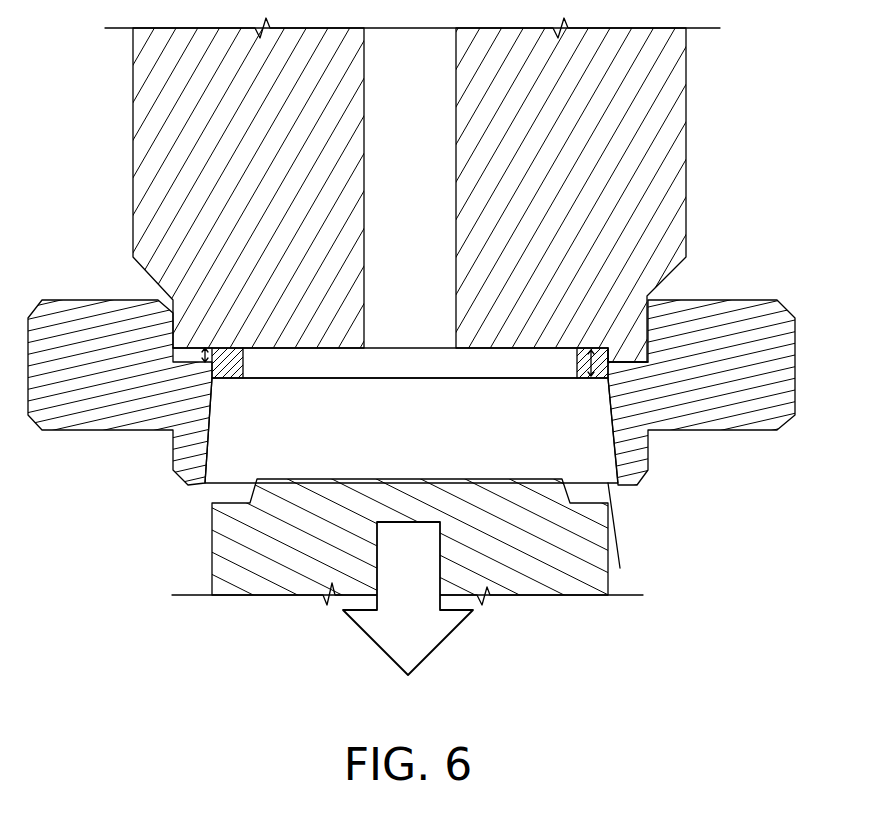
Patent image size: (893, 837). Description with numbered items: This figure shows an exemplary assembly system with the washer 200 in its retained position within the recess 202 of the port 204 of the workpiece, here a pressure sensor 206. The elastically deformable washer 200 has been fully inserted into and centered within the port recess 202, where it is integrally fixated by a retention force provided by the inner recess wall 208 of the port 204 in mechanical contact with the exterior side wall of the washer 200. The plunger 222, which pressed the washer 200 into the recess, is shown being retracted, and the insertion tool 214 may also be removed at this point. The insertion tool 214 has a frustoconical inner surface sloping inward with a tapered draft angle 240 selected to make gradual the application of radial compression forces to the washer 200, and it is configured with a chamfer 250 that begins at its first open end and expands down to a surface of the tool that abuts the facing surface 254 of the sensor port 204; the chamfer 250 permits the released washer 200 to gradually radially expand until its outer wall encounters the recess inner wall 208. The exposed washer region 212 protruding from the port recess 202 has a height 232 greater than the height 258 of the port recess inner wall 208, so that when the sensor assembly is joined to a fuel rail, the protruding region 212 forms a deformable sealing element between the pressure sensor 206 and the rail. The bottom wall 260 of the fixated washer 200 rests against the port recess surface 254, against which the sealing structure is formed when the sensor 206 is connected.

The washer 200 is at (588, 379).
The recess 202 is at (481, 363).
The port 204 is at (200, 343).
The pressure sensor 206 is at (238, 158).
The inner recess wall 208 is at (614, 360).
The exposed washer region 212 is at (210, 379).
The insertion tool 214 is at (770, 389).
The plunger 222 is at (529, 588).
The height of the washer 232 is at (577, 362).
The tapered draft angle 240 is at (613, 545).
The chamfer 250 is at (610, 377).
The facing surface of the sensor port 254 is at (243, 348).
The height of the port recess inner wall 258 is at (203, 355).
The bottom wall of the washer 260 is at (228, 379).